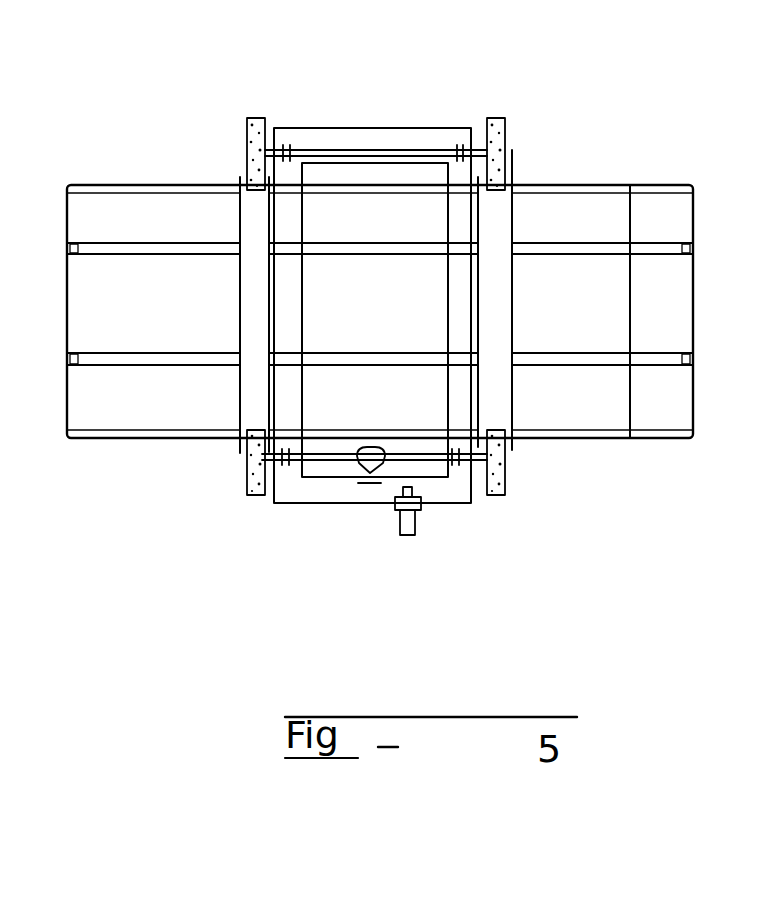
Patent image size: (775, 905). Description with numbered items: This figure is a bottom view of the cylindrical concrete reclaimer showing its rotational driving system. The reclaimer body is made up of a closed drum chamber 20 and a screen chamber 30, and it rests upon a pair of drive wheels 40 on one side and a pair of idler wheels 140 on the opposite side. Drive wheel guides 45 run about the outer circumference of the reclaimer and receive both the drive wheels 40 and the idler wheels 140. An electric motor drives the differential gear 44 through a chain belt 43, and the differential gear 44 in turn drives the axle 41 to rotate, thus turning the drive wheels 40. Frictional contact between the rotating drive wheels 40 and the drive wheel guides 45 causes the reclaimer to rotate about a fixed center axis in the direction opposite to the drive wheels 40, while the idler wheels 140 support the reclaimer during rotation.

The closed drum chamber 20 is at (630, 156).
The screen chamber 30 is at (155, 163).
The drive wheels 40 is at (253, 495).
The idler wheels 140 is at (258, 118).
The axle 41 is at (328, 463).
The chain belt 43 is at (422, 507).
The differential gear 44 is at (368, 472).
The drive wheel guides 45 is at (255, 303).